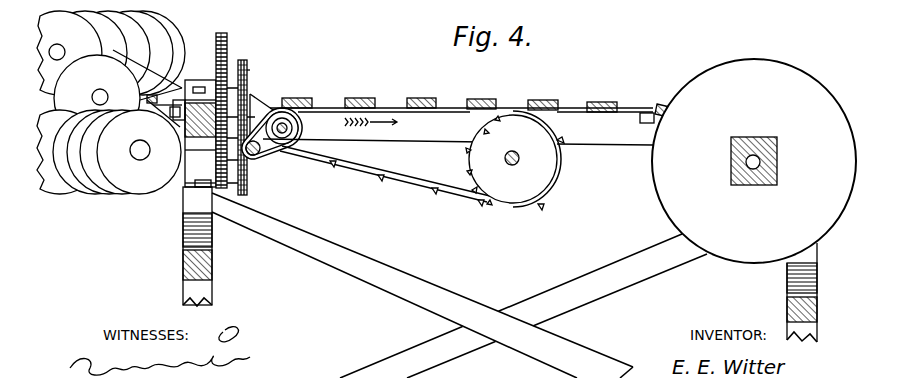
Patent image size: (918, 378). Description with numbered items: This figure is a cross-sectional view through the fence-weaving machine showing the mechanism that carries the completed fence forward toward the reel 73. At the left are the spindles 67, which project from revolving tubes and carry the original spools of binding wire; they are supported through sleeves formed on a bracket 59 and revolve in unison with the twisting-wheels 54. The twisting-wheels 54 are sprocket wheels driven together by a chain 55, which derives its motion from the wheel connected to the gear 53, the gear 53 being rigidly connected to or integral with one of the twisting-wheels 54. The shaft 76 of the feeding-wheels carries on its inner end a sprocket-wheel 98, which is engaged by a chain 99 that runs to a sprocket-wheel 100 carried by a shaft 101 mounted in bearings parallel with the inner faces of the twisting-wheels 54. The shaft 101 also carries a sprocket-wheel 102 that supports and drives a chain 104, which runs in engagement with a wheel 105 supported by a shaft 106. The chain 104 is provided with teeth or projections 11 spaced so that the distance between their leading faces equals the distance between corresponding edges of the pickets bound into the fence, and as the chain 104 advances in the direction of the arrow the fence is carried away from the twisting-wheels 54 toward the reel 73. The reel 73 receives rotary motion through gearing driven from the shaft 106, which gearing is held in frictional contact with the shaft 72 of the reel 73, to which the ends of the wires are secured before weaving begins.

The teeth or projections 11 is at (317, 150).
The gear 53 is at (230, 36).
The twisting-wheels 54 is at (250, 92).
The chain 55 is at (247, 62).
The bracket 59 is at (162, 92).
The spindles 67 is at (58, 45).
The shaft of the reel 72 is at (753, 170).
The reel 73 is at (754, 161).
The shaft 76 is at (255, 155).
The sprocket-wheel 98 is at (267, 124).
The chain 99 is at (262, 152).
The sprocket-wheel 100 is at (292, 128).
The shaft 101 is at (293, 138).
The sprocket-wheel 102 is at (291, 147).
The chains 104 is at (408, 178).
The wheels 105 is at (513, 159).
The shaft 106 is at (519, 159).